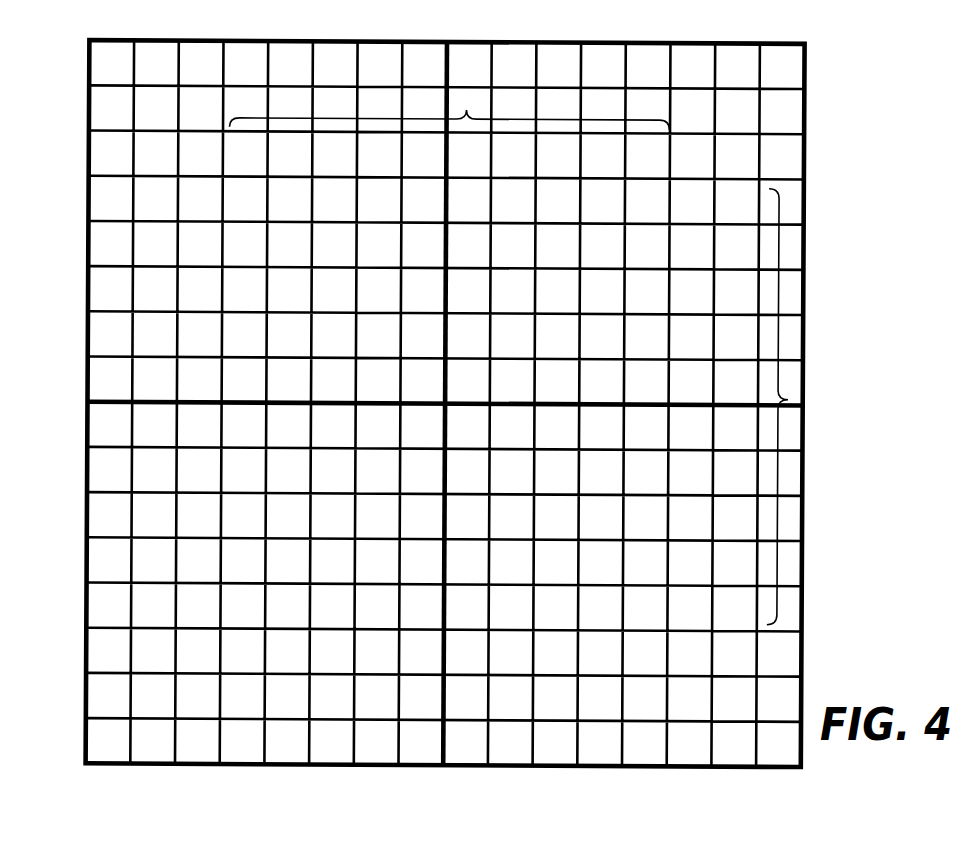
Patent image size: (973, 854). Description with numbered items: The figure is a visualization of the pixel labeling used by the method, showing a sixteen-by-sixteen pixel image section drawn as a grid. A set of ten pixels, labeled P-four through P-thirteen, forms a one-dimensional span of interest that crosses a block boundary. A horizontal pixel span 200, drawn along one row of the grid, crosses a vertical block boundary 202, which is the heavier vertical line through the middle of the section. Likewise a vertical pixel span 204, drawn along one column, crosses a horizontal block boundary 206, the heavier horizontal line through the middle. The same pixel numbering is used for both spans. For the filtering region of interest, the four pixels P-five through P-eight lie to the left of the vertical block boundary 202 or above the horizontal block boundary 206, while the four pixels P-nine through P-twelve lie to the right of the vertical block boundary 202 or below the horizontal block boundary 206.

The horizontal pixel span 200 is at (465, 110).
The vertical block boundary 202 is at (443, 748).
The vertical pixel span 204 is at (788, 398).
The horizontal block boundary 206 is at (116, 404).